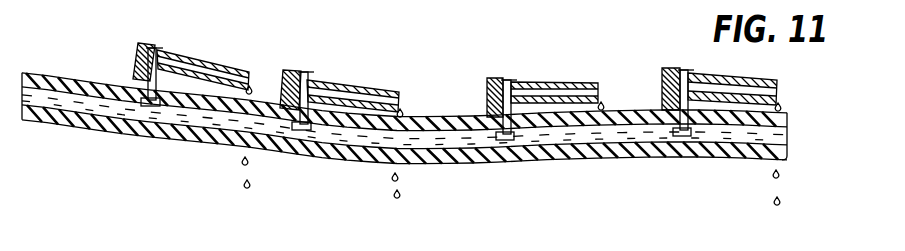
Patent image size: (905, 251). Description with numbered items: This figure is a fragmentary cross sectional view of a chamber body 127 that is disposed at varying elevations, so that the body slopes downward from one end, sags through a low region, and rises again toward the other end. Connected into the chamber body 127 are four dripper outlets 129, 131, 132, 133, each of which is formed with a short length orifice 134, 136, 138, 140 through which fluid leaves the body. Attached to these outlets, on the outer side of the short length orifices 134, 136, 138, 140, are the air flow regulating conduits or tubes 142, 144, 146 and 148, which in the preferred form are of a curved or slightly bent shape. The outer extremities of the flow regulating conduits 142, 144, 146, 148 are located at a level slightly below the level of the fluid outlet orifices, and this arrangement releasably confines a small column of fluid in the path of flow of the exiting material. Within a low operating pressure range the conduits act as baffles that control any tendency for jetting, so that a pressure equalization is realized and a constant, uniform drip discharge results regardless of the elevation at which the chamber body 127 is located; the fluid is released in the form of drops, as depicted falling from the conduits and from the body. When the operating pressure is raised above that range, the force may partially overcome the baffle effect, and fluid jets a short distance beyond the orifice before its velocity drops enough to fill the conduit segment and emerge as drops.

The chamber body 127 is at (497, 160).
The dripper outlet 129 is at (137, 58).
The dripper outlet 131 is at (283, 77).
The dripper outlet 132 is at (487, 88).
The dripper outlet 133 is at (665, 80).
The short length orifice 134 is at (153, 48).
The short length orifice 136 is at (310, 76).
The short length orifice 138 is at (505, 78).
The short length orifice 140 is at (697, 62).
The flow regulating conduit 142 is at (207, 62).
The flow regulating conduit 144 is at (383, 92).
The flow regulating conduit 146 is at (567, 81).
The flow regulating conduit 148 is at (733, 77).